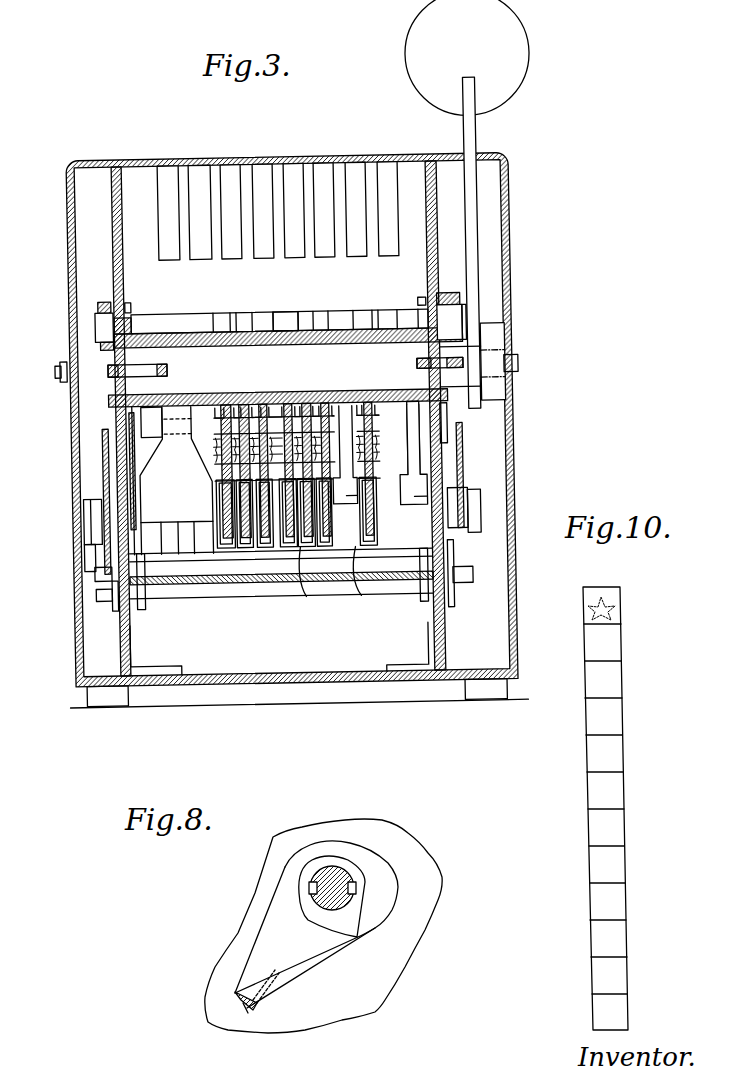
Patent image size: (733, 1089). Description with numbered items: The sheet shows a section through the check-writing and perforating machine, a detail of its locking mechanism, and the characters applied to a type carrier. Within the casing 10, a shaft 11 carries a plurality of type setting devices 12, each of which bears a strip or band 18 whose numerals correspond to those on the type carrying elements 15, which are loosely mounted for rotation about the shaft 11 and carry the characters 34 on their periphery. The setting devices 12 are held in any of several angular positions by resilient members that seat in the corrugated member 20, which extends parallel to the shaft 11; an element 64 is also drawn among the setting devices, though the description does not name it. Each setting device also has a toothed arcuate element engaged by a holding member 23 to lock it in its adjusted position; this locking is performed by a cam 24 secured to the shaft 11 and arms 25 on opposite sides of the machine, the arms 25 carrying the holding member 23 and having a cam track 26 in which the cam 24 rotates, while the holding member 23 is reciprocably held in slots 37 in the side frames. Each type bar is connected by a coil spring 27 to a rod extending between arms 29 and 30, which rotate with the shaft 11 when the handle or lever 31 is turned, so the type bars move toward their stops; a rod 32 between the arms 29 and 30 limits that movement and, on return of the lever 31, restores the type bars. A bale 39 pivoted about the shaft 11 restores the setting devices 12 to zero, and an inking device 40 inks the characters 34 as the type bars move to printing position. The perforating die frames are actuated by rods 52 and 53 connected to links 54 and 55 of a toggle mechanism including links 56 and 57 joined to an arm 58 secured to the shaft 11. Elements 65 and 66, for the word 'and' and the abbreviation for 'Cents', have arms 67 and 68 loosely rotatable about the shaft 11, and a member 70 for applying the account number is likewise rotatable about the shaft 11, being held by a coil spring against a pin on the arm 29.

In FIG. 3, the casing 10 is at (508, 268).
In FIG. 3, the shaft 11 is at (176, 350).
In FIG. 8, the shaft 11 is at (335, 870).
In FIG. 3, the type setting devices 12 is at (238, 326).
In FIG. 3, the type carrying elements 15 is at (244, 403).
In FIG. 10, the type carrying elements 15 is at (622, 858).
In FIG. 3, the strip or band 18 is at (220, 170).
In FIG. 3, the corrugated member 20 is at (287, 565).
In FIG. 8, the holding member 23 is at (257, 1003).
In FIG. 3, the cam 24 is at (116, 334).
In FIG. 8, the cam 24 is at (352, 915).
In FIG. 3, the arms 25 is at (422, 322).
In FIG. 8, the arms 25 is at (303, 960).
In FIG. 8, the cam track 26 is at (383, 890).
In FIG. 3, the coil spring 27 is at (330, 403).
In FIG. 3, the arm 29 is at (170, 402).
In FIG. 3, the arm 30 is at (442, 416).
In FIG. 3, the handle or lever 31 is at (478, 143).
In FIG. 3, the rod 32 is at (205, 420).
In FIG. 3, the characters 34 is at (250, 545).
In FIG. 10, the characters 34 is at (607, 747).
In FIG. 8, the slots 37 is at (247, 1010).
In FIG. 3, the bale 39 is at (63, 366).
In FIG. 3, the inking device 40 is at (186, 552).
In FIG. 3, the rod 52 is at (86, 560).
In FIG. 3, the rod 53 is at (362, 598).
In FIG. 3, the link 54 is at (90, 528).
In FIG. 3, the link 55 is at (114, 612).
In FIG. 3, the link 56 is at (97, 578).
In FIG. 3, the link 57 is at (103, 434).
In FIG. 3, the arm 58 is at (112, 300).
In FIG. 3, the spacer 64 is at (292, 326).
In FIG. 3, the element for applying the word 'and' 65 is at (338, 548).
In FIG. 3, the element for applying the abbreviation 'Cents' 66 is at (420, 488).
In FIG. 3, the arm 67 is at (352, 403).
In FIG. 3, the arm 68 is at (412, 402).
In FIG. 3, the account number applying member 70 is at (160, 490).